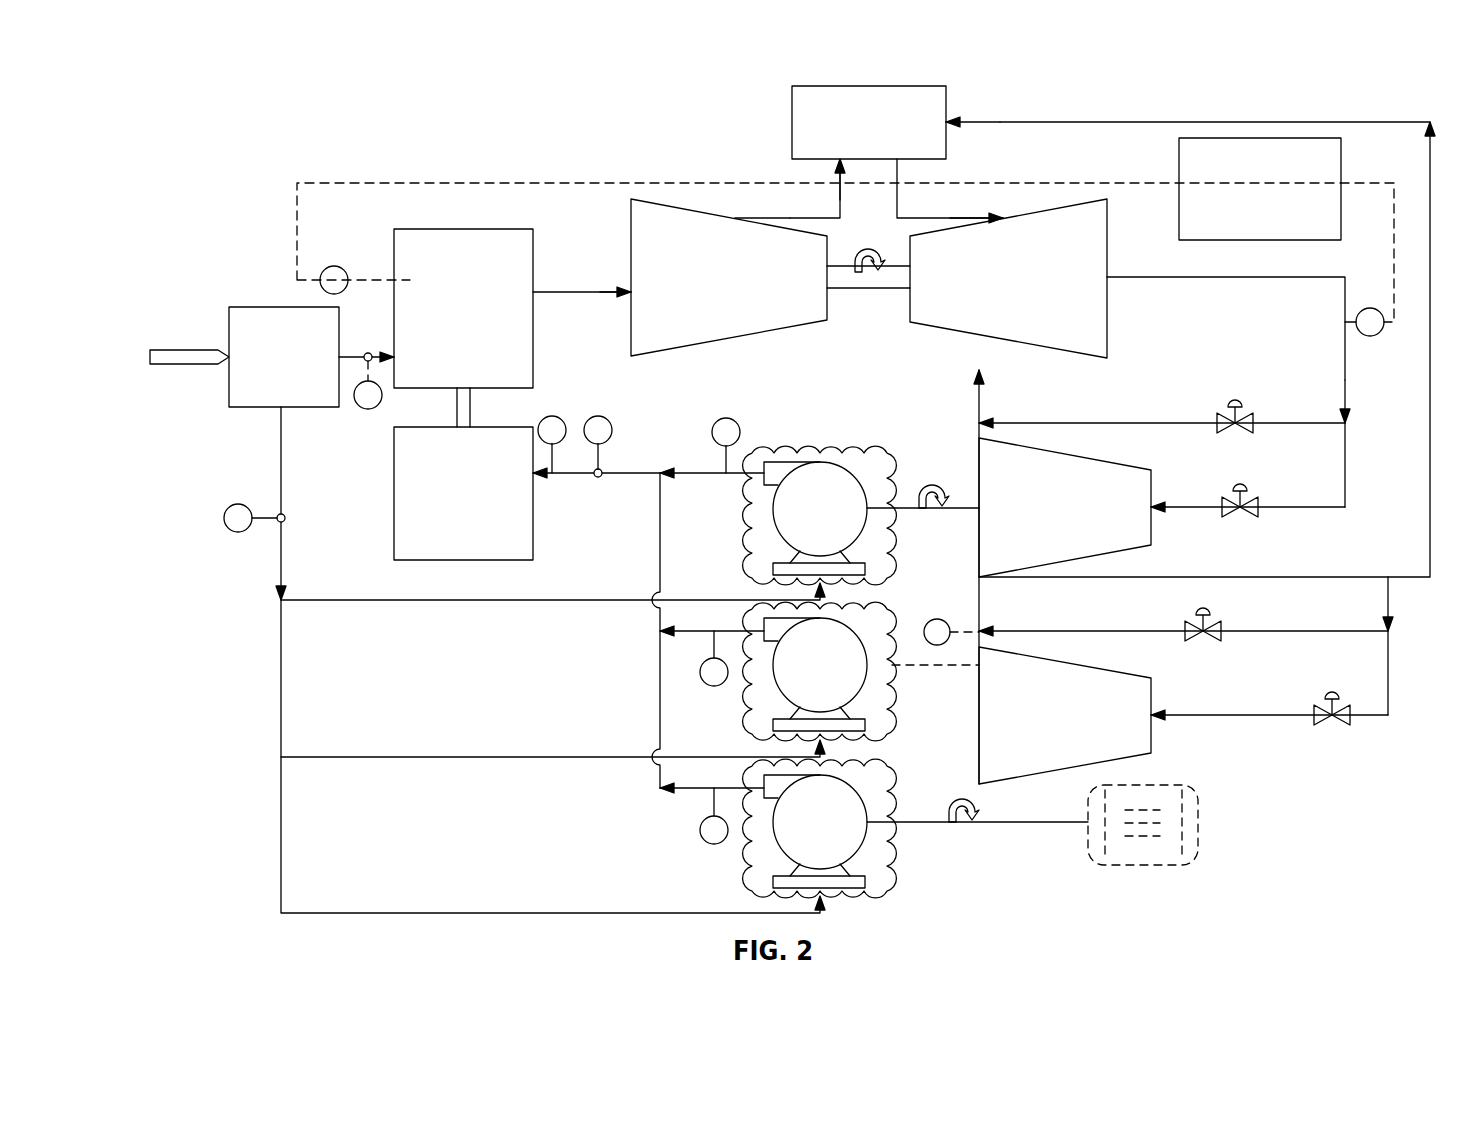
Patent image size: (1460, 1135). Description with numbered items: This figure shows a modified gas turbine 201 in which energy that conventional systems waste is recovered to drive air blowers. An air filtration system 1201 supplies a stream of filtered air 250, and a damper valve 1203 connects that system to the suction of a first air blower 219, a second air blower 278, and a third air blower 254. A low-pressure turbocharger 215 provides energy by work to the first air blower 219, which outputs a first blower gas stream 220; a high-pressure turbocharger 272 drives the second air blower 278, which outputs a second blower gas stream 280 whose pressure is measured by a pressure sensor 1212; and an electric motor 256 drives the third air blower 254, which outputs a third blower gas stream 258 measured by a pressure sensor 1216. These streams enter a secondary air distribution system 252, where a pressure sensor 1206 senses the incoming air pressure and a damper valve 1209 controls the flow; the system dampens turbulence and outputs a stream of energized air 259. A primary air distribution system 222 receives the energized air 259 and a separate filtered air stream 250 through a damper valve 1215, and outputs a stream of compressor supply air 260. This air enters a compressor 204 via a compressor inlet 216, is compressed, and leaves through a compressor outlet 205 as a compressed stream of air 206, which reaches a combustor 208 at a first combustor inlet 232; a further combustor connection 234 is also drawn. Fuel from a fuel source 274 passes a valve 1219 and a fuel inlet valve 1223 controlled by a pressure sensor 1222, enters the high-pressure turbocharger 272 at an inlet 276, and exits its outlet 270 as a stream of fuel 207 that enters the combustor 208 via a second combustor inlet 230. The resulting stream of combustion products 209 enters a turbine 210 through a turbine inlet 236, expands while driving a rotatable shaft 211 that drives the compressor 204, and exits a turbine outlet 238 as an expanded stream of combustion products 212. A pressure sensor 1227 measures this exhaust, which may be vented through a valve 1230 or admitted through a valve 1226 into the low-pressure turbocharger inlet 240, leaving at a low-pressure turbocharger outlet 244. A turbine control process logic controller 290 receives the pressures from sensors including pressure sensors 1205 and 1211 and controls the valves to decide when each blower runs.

The modified gas turbine 201 is at (168, 72).
The air filtration system 1201 is at (285, 307).
The pressure sensor 1205 is at (330, 285).
The stream of filtered air 250 is at (364, 353).
The primary air distribution system 222 is at (465, 229).
The damper valve 1215 is at (367, 398).
The stream of energized air 259 is at (473, 418).
The secondary air distribution system 252 is at (460, 560).
The pressure sensor 1206 is at (553, 432).
The damper valve 1209 is at (600, 431).
The pressure sensor 1211 is at (728, 432).
The stream of compressor supply air 260 is at (568, 292).
The compressor inlet 216 is at (626, 300).
The compressor 204 is at (657, 212).
The compressor outlet 205 is at (735, 218).
The compressed stream of air 206 is at (783, 218).
The first combustor inlet 232 is at (850, 162).
The combustor outlet 234 is at (903, 162).
The stream of combustion products 209 is at (958, 216).
The combustor 208 is at (860, 97).
The second combustor inlet 230 is at (948, 120).
The rotatable shaft 211 is at (864, 294).
The turbine 210 is at (992, 327).
The stream of fuel 207 is at (1162, 122).
The turbine control process logic controller 290 is at (1255, 138).
The turbine inlet 236 is at (1003, 208).
The turbine outlet 238 is at (1108, 277).
The pressure sensor 1227 is at (1370, 330).
The expanded stream of combustion products 212 is at (1347, 383).
The low-pressure turbocharger outlet 244 is at (978, 432).
The valve 1230 is at (1248, 430).
The low-pressure turbocharger 215 is at (1065, 474).
The low-pressure turbocharger inlet 240 is at (1155, 505).
The valve 1226 is at (1252, 500).
The first air blower 219 is at (840, 476).
The first blower gas stream 220 is at (740, 473).
The second air blower 278 is at (858, 650).
The second blower gas stream 280 is at (668, 625).
The pressure sensor 1212 is at (700, 678).
The pressure sensor 1222 is at (935, 646).
The outlet 270 is at (983, 630).
The fuel inlet valve 1223 is at (1210, 640).
The fuel source 274 is at (1390, 676).
The inlet 276 is at (1155, 717).
The valve 1219 is at (1336, 724).
The high-pressure turbocharger 272 is at (1052, 756).
The electric motor 256 is at (1195, 825).
The third air blower 254 is at (858, 838).
The third blower gas stream 258 is at (684, 792).
The pressure sensor 1216 is at (710, 832).
The damper valve 1203 is at (242, 522).